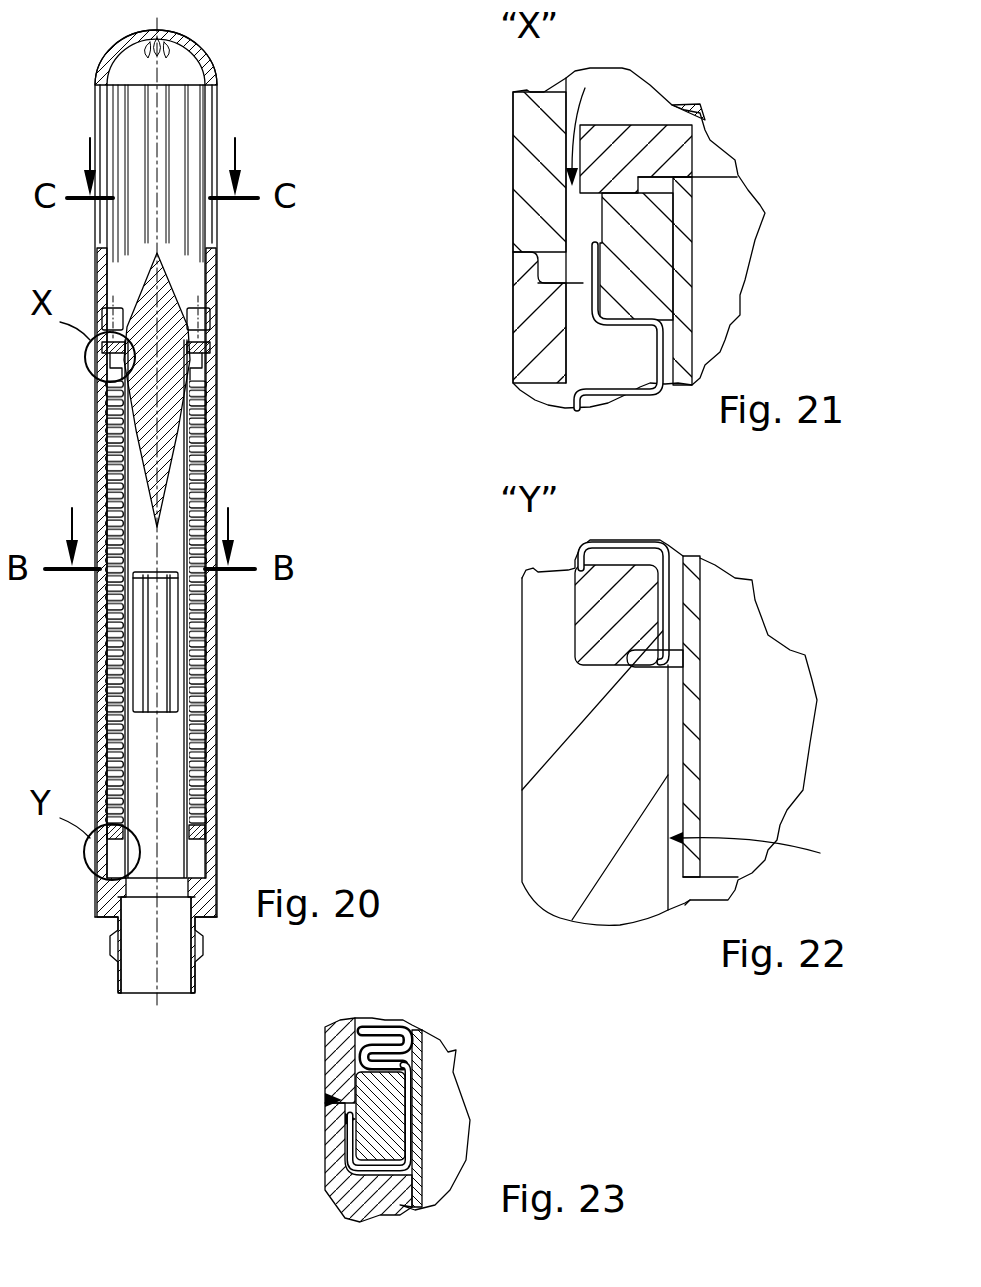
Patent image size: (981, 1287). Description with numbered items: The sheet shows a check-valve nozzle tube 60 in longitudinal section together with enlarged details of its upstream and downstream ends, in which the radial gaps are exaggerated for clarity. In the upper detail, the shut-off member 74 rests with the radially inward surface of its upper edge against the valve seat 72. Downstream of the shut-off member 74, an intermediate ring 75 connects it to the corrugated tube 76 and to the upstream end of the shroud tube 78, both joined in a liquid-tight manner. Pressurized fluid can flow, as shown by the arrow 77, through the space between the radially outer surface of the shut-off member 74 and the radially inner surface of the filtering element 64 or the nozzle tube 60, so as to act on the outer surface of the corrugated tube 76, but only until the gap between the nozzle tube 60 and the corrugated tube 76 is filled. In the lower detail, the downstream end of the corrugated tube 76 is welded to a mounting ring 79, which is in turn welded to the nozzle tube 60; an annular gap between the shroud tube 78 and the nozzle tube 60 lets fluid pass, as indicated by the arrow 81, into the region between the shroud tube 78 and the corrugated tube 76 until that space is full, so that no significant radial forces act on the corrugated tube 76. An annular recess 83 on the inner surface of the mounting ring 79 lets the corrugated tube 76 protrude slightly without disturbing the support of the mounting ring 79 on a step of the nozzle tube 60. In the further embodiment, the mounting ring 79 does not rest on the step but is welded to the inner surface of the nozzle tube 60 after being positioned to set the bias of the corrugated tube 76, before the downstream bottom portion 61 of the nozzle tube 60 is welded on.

In FIG. 20, the nozzle tube 60 is at (100, 468).
In FIG. 21, the nozzle tube 60 is at (532, 327).
In FIG. 22, the nozzle tube 60 is at (550, 643).
In FIG. 23, the nozzle tube 60 is at (330, 1043).
In FIG. 23, the downstream bottom portion 61 is at (330, 1150).
In FIG. 21, the filtering element 64 is at (532, 162).
In FIG. 21, the valve seat 72 is at (705, 117).
In FIG. 20, the shut-off member 74 is at (107, 368).
In FIG. 21, the shut-off member 74 is at (630, 140).
In FIG. 21, the intermediate ring 75 is at (630, 243).
In FIG. 20, the corrugated tube 76 is at (207, 430).
In FIG. 21, the corrugated tube 76 is at (613, 327).
In FIG. 22, the corrugated tube 76 is at (624, 560).
In FIG. 23, the corrugated tube 76 is at (393, 1038).
In FIG. 21, the arrow 77 is at (577, 100).
In FIG. 20, the shroud tube 78 is at (124, 856).
In FIG. 21, the shroud tube 78 is at (688, 250).
In FIG. 22, the shroud tube 78 is at (700, 690).
In FIG. 23, the shroud tube 78 is at (418, 1120).
In FIG. 22, the mounting ring 79 is at (583, 586).
In FIG. 23, the mounting ring 79 is at (375, 1086).
In FIG. 22, the arrow 81 is at (767, 850).
In FIG. 22, the annular recess 83 is at (648, 662).